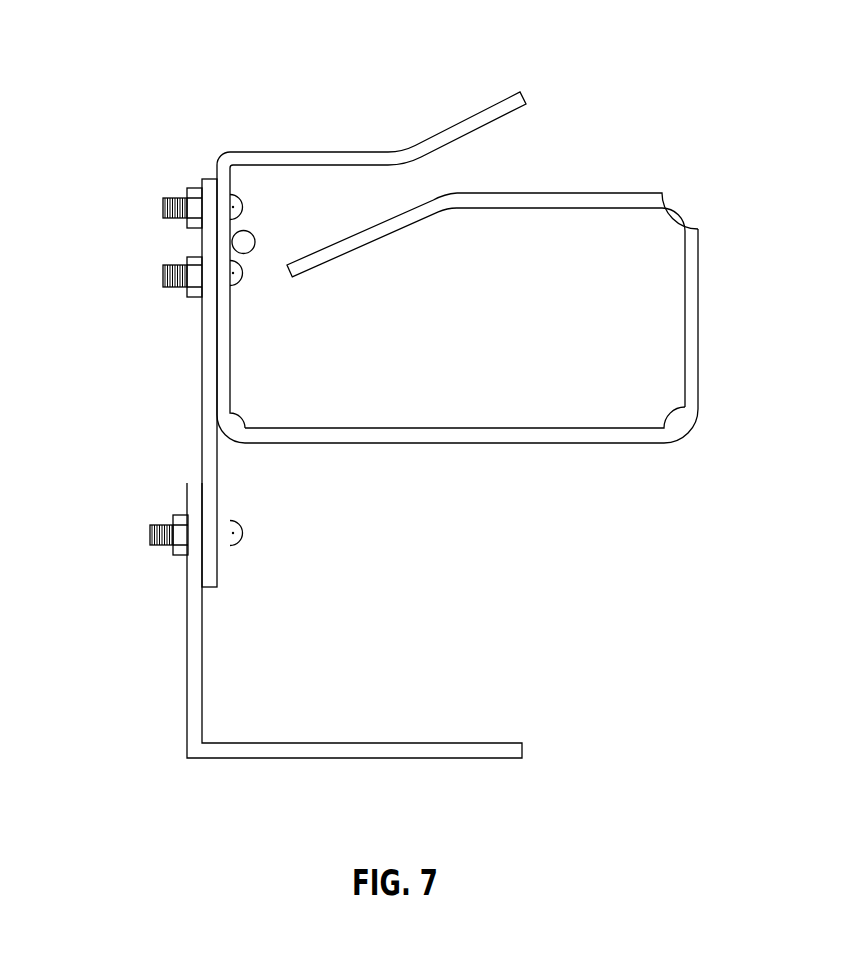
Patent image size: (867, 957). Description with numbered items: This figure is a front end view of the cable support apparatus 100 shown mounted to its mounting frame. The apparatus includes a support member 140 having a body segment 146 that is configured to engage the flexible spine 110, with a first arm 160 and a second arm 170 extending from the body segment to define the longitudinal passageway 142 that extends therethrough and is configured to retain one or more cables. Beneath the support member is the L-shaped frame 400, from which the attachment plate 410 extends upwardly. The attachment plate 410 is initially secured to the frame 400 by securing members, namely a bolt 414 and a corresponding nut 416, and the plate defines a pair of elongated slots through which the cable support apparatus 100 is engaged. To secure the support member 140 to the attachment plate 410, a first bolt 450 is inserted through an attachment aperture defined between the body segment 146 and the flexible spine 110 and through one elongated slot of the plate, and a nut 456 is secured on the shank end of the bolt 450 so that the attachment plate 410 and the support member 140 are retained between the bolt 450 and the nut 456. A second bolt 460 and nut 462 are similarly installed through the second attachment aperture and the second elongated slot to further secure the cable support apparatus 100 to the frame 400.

The cable support apparatus 100 is at (662, 49).
The flexible spine 110 is at (248, 233).
The support member 140 is at (683, 184).
The longitudinal passageway 142 is at (493, 388).
The body segment 146 is at (120, 175).
The first arm 160 is at (693, 320).
The second arm 170 is at (378, 157).
The frame 400 is at (387, 748).
The attachment plate 410 is at (212, 462).
The bolt 414 is at (229, 536).
The nut 416 is at (180, 556).
The bolt 450 is at (241, 198).
The nut 456 is at (195, 187).
The bolt 460 is at (241, 284).
The nut 462 is at (195, 297).